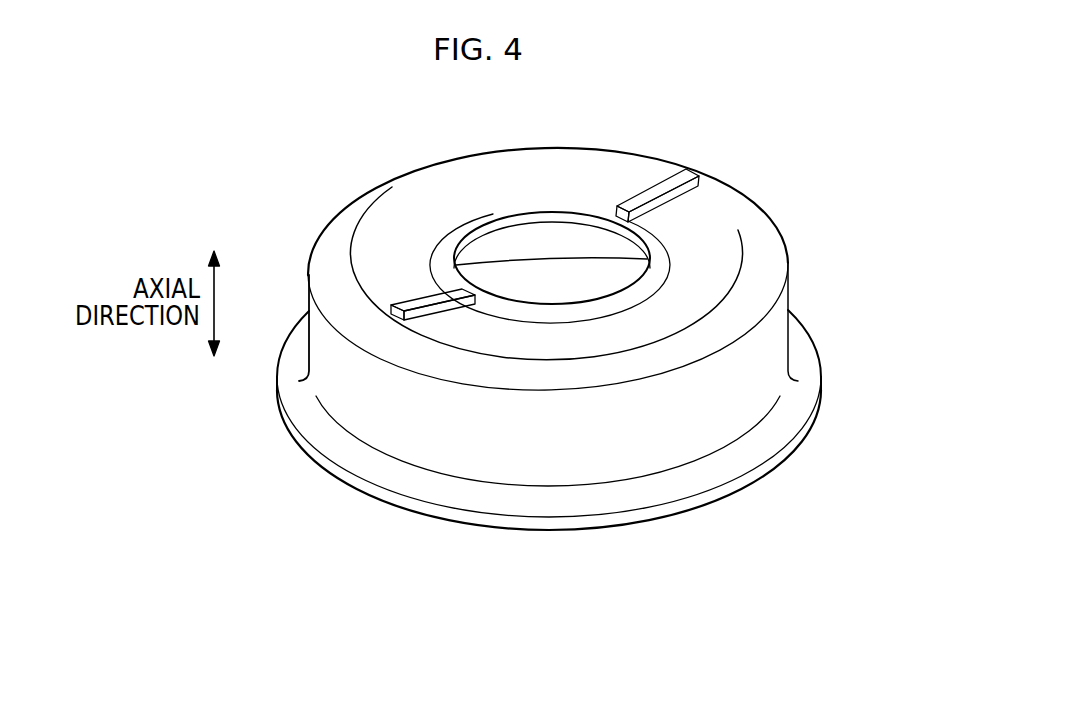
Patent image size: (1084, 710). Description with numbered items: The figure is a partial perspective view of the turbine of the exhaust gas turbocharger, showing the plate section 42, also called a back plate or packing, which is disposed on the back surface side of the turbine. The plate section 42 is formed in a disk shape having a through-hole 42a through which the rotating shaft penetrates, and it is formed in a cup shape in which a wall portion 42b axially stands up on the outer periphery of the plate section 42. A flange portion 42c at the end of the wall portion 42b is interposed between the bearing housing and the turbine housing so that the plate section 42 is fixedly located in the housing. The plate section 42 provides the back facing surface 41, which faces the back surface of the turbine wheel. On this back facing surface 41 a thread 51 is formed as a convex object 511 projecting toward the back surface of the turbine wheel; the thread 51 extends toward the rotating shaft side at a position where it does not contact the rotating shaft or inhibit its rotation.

The back facing surface 41 is at (713, 224).
The plate section 42 is at (749, 290).
The through-hole 42a is at (593, 297).
The wall portion 42b is at (788, 353).
The flange portion 42c is at (627, 500).
The convex object 511 is at (672, 188).
The thread 51 is at (599, 355).